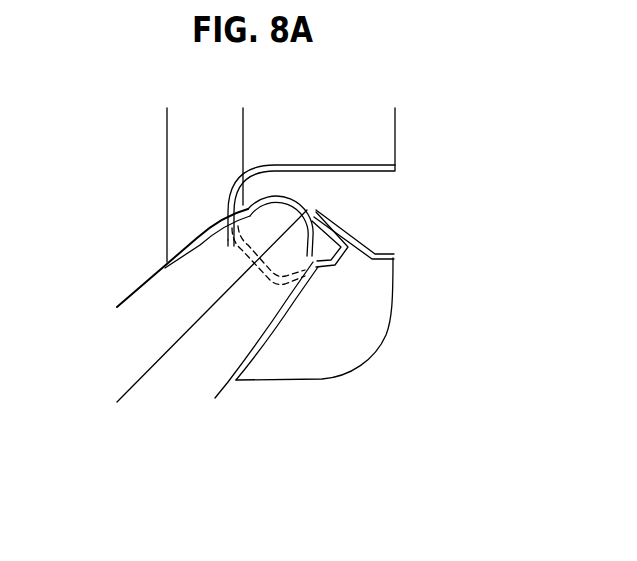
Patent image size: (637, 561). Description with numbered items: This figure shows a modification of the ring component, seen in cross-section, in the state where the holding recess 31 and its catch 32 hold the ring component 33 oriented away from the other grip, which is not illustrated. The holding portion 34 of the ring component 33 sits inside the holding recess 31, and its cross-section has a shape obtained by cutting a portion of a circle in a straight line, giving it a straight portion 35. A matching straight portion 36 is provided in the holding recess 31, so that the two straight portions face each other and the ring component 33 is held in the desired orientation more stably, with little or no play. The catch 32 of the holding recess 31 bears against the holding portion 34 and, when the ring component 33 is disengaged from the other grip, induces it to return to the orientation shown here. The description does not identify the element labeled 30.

The panel 30 is at (365, 135).
The holding recess 31 is at (380, 197).
The catch 32 is at (342, 225).
The ring component 33 is at (187, 380).
The holding portion 34 is at (270, 227).
The straight portion 35 is at (200, 230).
The straight portion 36 is at (246, 254).